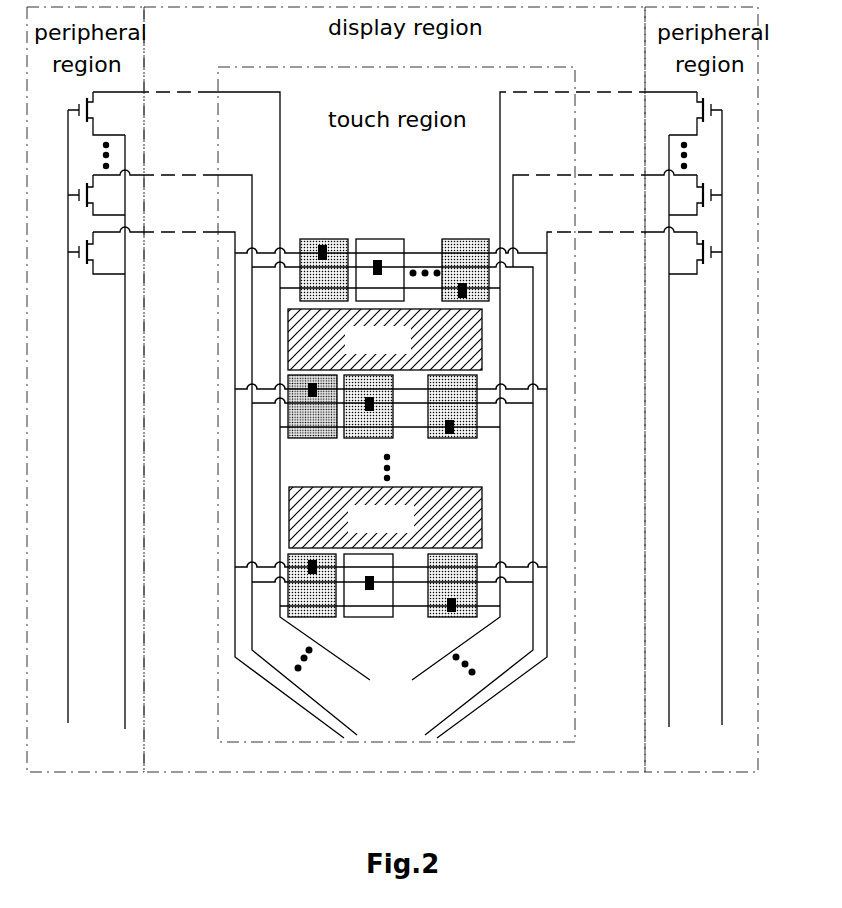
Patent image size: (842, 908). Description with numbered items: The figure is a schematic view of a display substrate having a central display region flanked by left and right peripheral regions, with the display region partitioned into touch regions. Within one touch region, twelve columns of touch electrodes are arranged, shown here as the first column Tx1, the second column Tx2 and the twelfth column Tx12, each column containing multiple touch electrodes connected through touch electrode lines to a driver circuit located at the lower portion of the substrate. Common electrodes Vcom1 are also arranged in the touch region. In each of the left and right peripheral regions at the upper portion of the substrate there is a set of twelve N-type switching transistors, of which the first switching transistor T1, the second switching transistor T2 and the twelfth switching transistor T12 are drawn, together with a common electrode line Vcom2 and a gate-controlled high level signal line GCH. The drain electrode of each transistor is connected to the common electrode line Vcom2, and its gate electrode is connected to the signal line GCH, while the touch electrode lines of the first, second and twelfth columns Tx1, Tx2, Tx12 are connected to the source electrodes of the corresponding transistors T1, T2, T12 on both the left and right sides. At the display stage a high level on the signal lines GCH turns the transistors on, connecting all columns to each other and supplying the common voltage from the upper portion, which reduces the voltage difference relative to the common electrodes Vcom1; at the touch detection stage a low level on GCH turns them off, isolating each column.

The first switching transistor T1 is at (395, 482).
The second switching transistor T2 is at (394, 452).
The twelfth switching transistor T12 is at (396, 386).
The first column of touch electrodes Tx1 is at (318, 421).
The second column of touch electrodes Tx2 is at (374, 421).
The twelfth column of touch electrodes Tx12 is at (455, 421).
The common electrode Vcom1 is at (385, 428).
The common electrode line Vcom2 is at (399, 443).
The gate-controlled high level signal line GCH is at (397, 428).